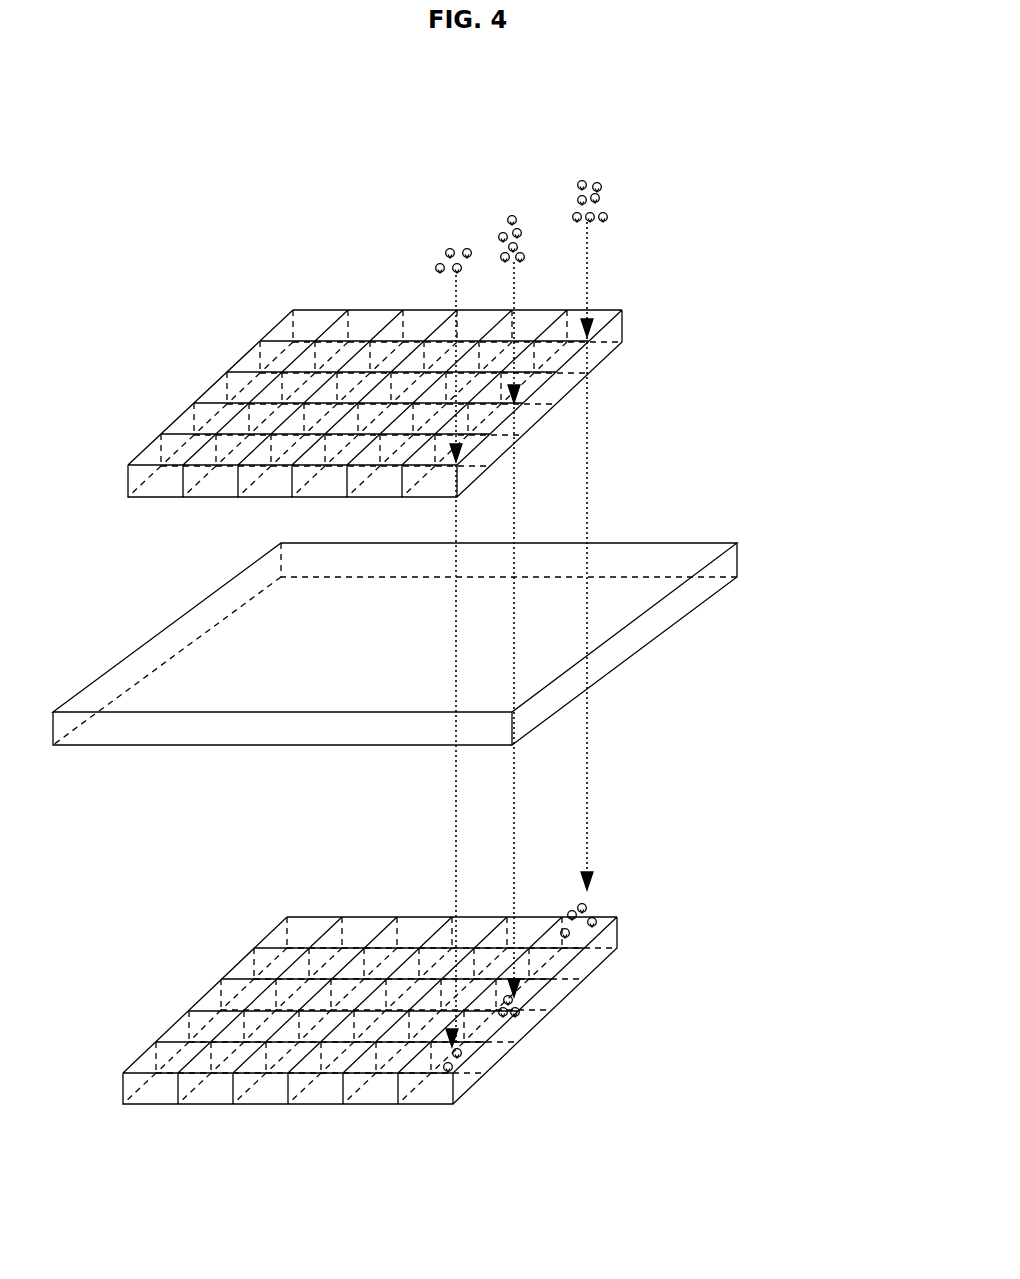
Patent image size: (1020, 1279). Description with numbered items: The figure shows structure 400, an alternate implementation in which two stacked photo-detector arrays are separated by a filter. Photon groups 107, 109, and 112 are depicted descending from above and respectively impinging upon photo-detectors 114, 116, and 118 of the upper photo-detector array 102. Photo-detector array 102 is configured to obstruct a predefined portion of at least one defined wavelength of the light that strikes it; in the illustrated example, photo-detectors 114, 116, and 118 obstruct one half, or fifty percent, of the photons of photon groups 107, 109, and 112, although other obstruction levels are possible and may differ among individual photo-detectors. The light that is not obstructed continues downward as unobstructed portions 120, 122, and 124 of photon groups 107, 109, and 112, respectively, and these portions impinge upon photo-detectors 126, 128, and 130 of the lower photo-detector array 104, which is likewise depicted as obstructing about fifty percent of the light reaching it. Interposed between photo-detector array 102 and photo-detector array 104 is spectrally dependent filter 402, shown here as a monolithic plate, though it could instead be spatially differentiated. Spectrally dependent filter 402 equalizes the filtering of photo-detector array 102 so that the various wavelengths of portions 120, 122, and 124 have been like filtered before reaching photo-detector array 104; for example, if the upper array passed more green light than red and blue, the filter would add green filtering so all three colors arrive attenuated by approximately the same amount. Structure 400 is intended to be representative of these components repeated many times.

The structure 400 is at (146, 148).
The photo-detector array 102 is at (277, 250).
The photo-detector array 104 is at (155, 988).
The spectrally dependent filter 402 is at (680, 543).
The photon group 112 is at (467, 222).
The photon group 109 is at (547, 193).
The photon group 107 is at (636, 182).
The photo-detector 114 is at (790, 329).
The photo-detector 116 is at (761, 399).
The photo-detector 118 is at (735, 463).
The unobstructed portion 120 is at (547, 848).
The unobstructed portion 122 is at (481, 880).
The unobstructed portion 124 is at (413, 888).
The photo-detector 126 is at (780, 965).
The photo-detector 128 is at (745, 1027).
The photo-detector 130 is at (696, 1102).